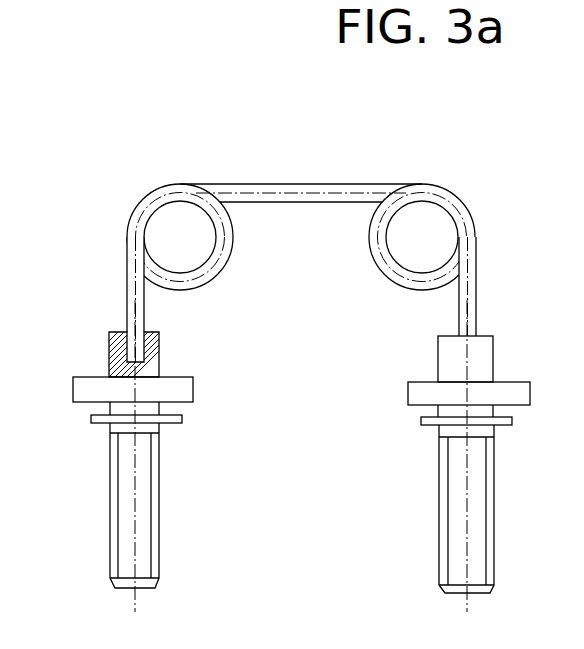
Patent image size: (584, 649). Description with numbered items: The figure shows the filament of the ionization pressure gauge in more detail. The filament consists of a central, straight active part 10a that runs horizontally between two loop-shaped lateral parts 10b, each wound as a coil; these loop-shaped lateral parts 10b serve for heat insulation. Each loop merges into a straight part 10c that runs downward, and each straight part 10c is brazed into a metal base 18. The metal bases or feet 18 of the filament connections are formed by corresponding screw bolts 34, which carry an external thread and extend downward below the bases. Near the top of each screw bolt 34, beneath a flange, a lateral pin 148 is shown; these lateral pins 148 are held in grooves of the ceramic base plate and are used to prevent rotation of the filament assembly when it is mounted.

The central straight active part 10a is at (280, 187).
The loop-shaped lateral parts 10b is at (137, 210).
The straight parts 10c is at (130, 293).
The metal base 18 is at (110, 355).
The lateral pins 148 is at (93, 422).
The screw bolts 34 is at (132, 535).